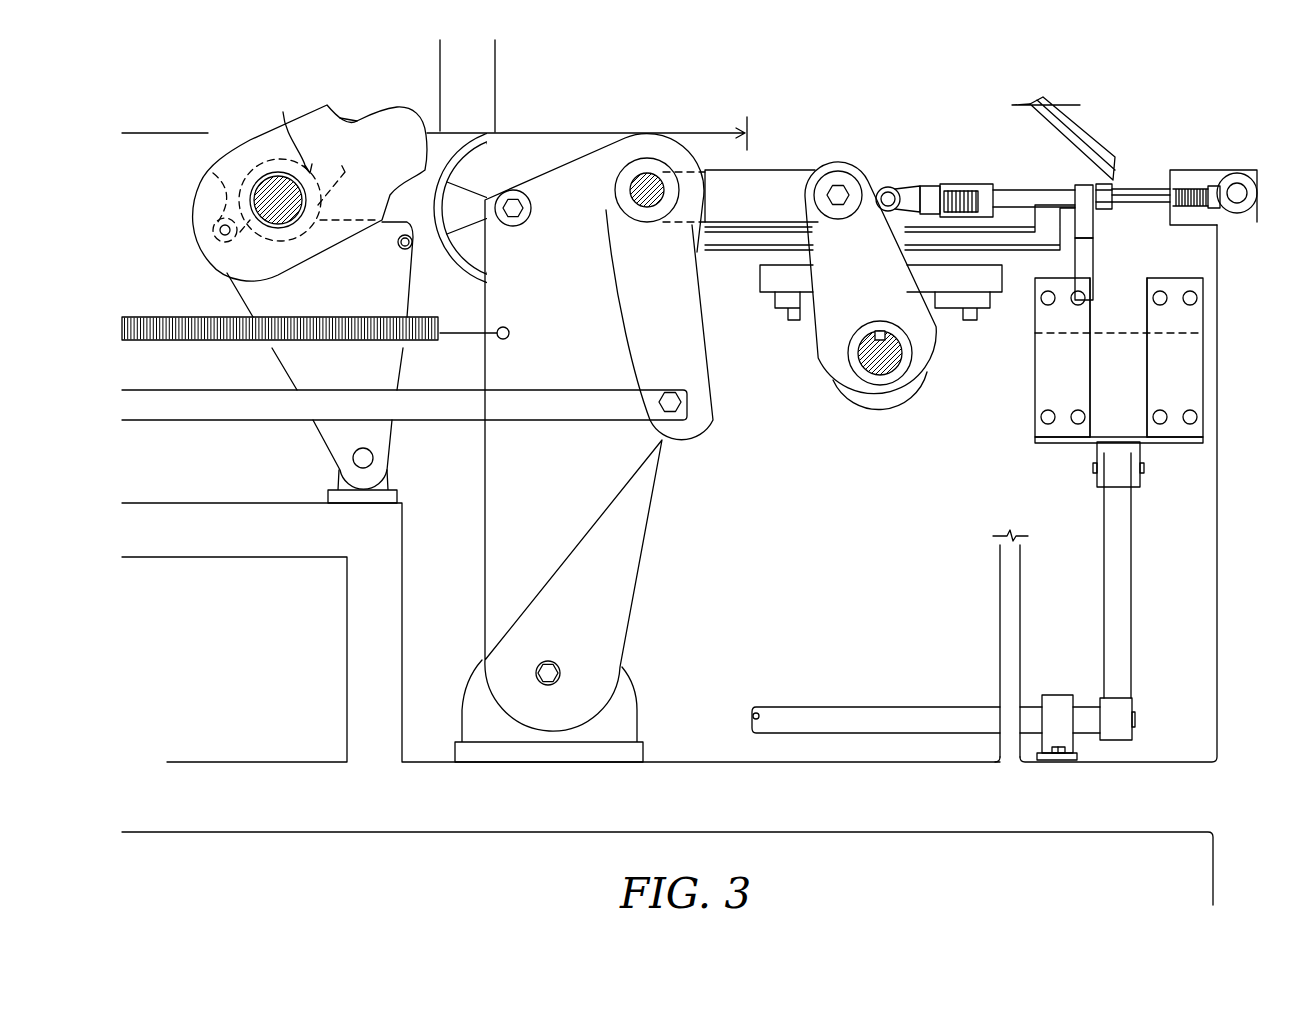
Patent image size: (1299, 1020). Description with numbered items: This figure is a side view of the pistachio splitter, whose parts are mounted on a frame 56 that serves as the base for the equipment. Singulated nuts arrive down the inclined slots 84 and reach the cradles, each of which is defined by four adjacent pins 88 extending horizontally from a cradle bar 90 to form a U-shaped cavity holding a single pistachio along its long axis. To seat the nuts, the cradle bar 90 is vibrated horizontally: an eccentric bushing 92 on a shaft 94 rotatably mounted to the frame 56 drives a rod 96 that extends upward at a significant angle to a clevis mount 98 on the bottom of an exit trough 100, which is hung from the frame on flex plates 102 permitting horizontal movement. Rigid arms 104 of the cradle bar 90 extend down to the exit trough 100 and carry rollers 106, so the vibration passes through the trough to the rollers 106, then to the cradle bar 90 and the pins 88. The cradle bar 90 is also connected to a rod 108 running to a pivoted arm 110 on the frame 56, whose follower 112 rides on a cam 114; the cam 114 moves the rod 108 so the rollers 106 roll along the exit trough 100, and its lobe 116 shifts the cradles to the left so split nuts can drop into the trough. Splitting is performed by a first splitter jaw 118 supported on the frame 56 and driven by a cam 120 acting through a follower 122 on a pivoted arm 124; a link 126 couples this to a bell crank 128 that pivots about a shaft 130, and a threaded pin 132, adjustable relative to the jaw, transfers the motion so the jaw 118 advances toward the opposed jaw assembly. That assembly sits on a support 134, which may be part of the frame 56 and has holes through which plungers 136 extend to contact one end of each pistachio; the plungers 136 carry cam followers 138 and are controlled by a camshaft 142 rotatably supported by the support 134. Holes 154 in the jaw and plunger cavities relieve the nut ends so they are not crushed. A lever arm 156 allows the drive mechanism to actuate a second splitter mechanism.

The frame 56 is at (768, 290).
The inclined slots 84 is at (1075, 130).
The pins 88 is at (1133, 187).
The cradle bar 90 is at (1087, 182).
The eccentric bushing 92 is at (1133, 707).
The shaft 94 is at (893, 717).
The rod 96 is at (1122, 543).
The clevis mount 98 is at (1097, 480).
The exit trough 100 is at (1115, 333).
The flex plates 102 is at (1035, 310).
The rigid arms 104 is at (1093, 263).
The rollers 106 is at (1085, 305).
The rod 108 is at (735, 242).
The pivoted arm 110 is at (410, 283).
The follower 112 is at (197, 240).
The cam 114 is at (202, 163).
The lobe 116 is at (295, 129).
The first splitter jaw 118 is at (1107, 197).
The cam 120 is at (353, 122).
The follower 122 is at (520, 135).
The pivoted arm 124 is at (630, 507).
The link 126 is at (782, 180).
The bell crank 128 is at (865, 172).
The shaft 130 is at (882, 370).
The threaded pin 132 is at (905, 188).
The support 134 is at (1207, 172).
The plungers 136 is at (1168, 180).
The cam followers 138 is at (1217, 213).
The camshaft 142 is at (1237, 190).
The holes 154 is at (530, 398).
The lever arm 156 is at (647, 310).